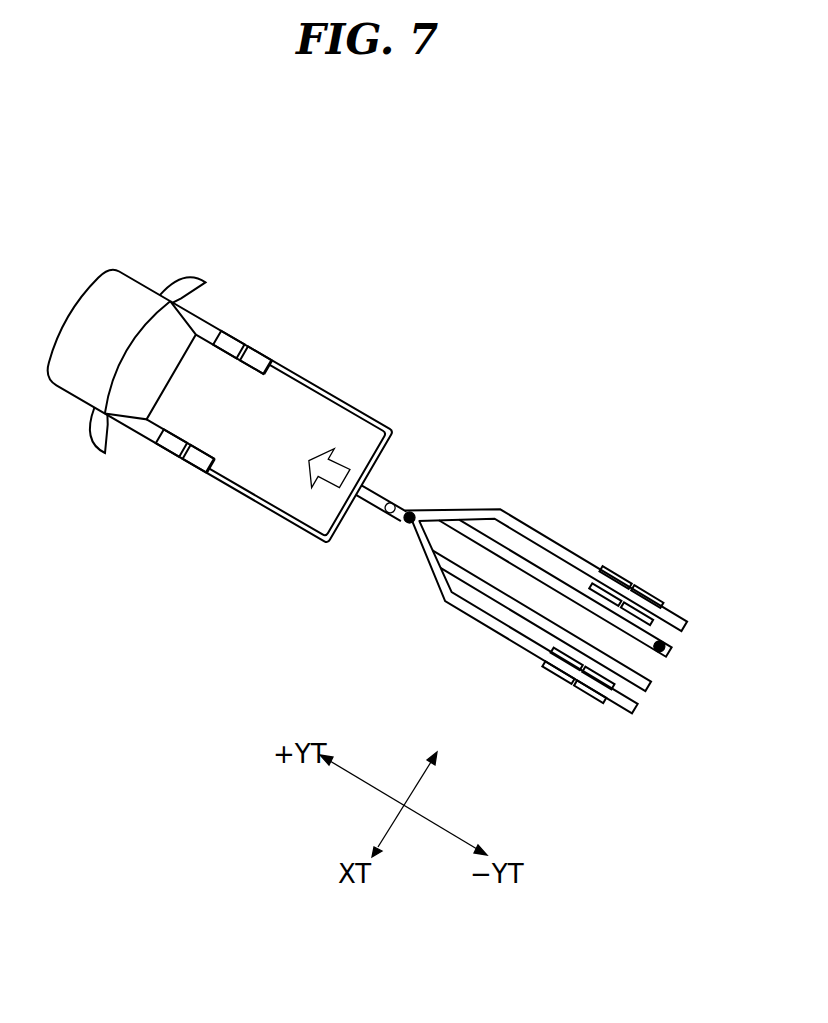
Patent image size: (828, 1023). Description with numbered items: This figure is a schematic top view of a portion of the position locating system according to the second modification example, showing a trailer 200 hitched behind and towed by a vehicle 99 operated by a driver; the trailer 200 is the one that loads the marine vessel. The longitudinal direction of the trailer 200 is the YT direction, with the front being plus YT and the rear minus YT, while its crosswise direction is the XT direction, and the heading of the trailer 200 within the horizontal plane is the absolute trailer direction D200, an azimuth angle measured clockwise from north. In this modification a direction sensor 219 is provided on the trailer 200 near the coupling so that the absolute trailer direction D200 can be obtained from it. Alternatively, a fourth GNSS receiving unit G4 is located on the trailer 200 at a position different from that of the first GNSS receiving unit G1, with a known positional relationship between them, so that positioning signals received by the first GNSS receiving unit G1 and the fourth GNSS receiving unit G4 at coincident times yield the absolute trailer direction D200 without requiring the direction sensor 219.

The vehicle 99 is at (263, 349).
The trailer 200 is at (527, 658).
The direction sensor 219 is at (389, 514).
The first GNSS receiving unit G1 is at (410, 526).
The fourth GNSS receiving unit G4 is at (662, 652).
The absolute trailer direction D200 is at (299, 463).